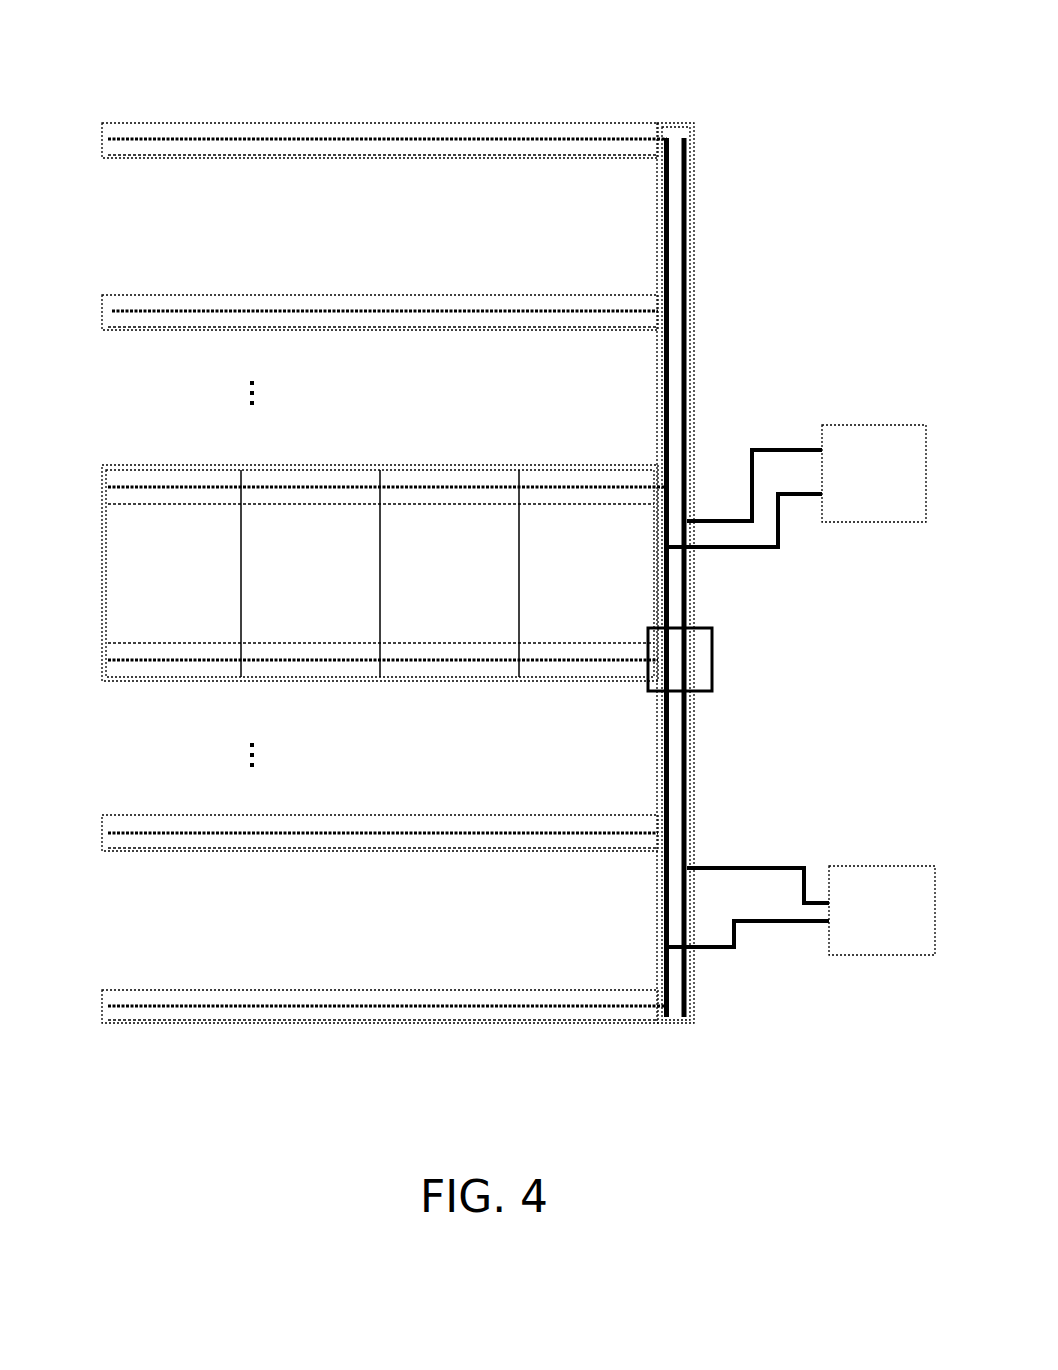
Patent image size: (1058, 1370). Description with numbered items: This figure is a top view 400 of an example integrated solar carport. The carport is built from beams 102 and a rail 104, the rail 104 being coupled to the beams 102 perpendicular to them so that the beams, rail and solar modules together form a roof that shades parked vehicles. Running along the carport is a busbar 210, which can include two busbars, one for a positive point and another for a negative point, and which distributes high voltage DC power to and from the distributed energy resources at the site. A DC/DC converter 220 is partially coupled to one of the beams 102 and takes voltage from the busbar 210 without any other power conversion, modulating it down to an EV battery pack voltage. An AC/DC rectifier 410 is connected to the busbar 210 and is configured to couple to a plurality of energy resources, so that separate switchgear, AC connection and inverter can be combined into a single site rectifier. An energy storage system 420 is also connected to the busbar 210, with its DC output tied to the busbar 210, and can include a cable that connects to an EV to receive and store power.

The top view 400 is at (137, 69).
The beam 102 is at (692, 781).
The rail 104 is at (457, 988).
The busbar 210 is at (689, 990).
The DC/DC converter 220 is at (715, 692).
The AC/DC rectifier 410 is at (890, 484).
The energy storage system 420 is at (899, 920).